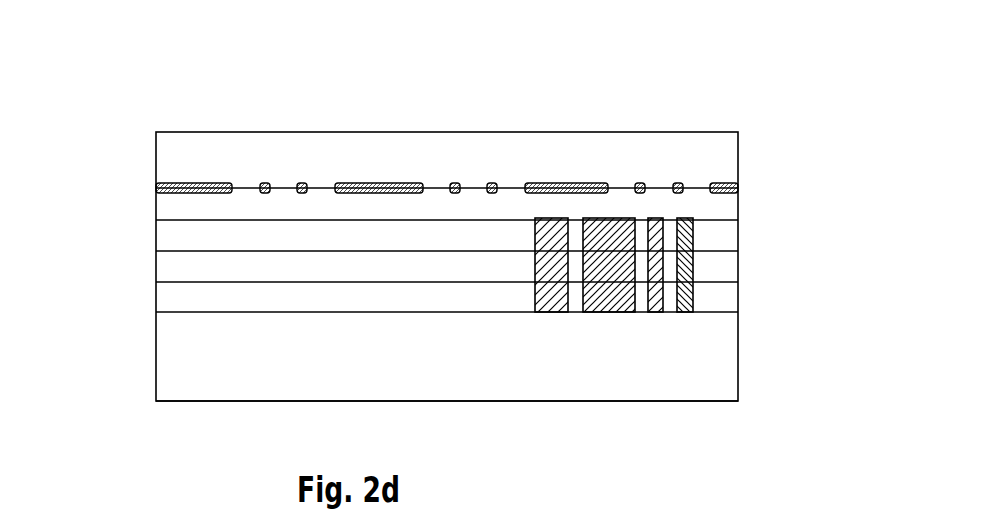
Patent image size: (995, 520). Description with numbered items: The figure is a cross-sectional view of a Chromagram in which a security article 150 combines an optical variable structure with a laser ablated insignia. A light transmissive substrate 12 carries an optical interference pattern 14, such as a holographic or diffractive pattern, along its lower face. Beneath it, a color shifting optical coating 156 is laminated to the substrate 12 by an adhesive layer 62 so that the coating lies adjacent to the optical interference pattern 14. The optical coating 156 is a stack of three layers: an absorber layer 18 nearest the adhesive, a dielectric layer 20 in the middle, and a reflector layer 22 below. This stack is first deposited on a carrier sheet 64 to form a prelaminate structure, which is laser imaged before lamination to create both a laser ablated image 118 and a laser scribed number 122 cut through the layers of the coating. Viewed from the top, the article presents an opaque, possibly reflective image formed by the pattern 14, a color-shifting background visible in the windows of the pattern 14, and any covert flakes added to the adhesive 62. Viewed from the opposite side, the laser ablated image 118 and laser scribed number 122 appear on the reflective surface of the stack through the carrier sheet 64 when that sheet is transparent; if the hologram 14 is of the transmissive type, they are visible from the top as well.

The security article 150 is at (163, 102).
The light transmissive substrate 12 is at (722, 154).
The optical interference pattern 14 is at (562, 182).
The adhesive layer 62 is at (725, 198).
The absorber layer 18 is at (167, 233).
The dielectric layer 20 is at (163, 267).
The reflector layer 22 is at (163, 297).
The carrier sheet 64 is at (722, 350).
The laser ablated image 118 is at (665, 325).
The laser scribed number 122 is at (688, 313).
The color shifting optical coating 156 is at (753, 215).